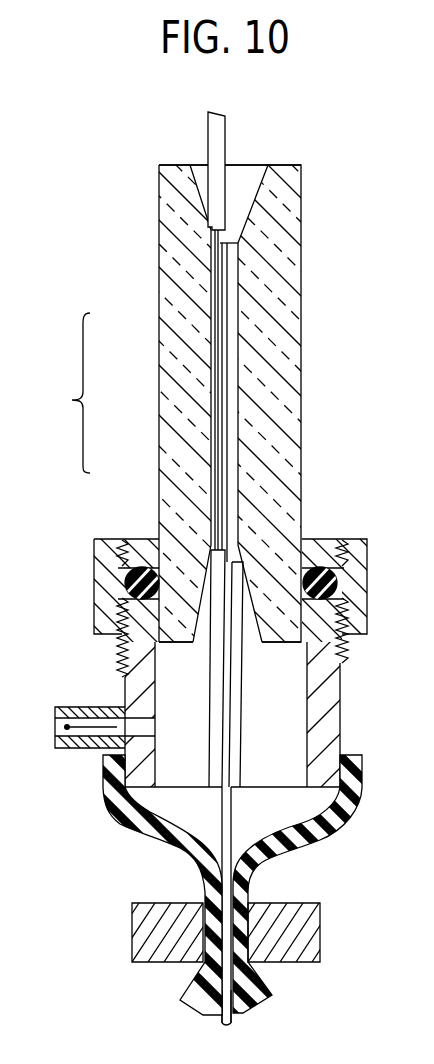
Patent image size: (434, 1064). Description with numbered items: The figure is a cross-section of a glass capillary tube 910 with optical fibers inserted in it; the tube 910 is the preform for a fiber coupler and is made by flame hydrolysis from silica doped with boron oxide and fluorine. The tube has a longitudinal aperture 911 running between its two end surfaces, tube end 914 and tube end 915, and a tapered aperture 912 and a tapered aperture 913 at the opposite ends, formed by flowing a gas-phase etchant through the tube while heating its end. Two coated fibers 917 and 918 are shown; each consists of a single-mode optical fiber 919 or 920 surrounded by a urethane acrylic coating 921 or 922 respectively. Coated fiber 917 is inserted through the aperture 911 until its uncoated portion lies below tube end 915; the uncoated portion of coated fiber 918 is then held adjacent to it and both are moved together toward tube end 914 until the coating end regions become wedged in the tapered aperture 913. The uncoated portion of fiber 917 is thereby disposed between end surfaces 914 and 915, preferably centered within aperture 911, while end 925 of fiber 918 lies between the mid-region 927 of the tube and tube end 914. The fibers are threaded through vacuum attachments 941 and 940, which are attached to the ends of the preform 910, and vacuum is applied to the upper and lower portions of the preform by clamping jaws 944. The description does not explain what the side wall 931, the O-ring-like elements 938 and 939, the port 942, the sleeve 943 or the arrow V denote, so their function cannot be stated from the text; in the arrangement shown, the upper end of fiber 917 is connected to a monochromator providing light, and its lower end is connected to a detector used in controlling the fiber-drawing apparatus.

The glass capillary tube 910 is at (302, 186).
The aperture 911 is at (243, 334).
The tapered aperture 912 is at (259, 180).
The tapered aperture 913 is at (258, 645).
The tube end 914 is at (190, 165).
The tube end 915 is at (177, 647).
The coated fiber 917 is at (208, 125).
The coated fiber 918 is at (231, 800).
The single-mode optical fiber 919 is at (211, 413).
The single-mode optical fiber 920 is at (232, 443).
The urethane acrylic coating 921 is at (227, 127).
The urethane acrylic coating 922 is at (238, 712).
The end of fiber 925 is at (238, 245).
The mid-region 927 is at (72, 400).
The side wall 931 is at (159, 215).
The O-ring seal 938 is at (330, 538).
The O-ring seal 939 is at (125, 537).
The vacuum attachment 940 is at (123, 667).
The vacuum attachment 941 is at (87, 577).
The vacuum port 942 is at (78, 748).
The flexible seal sleeve 943 is at (312, 843).
The clamping jaw 944 is at (140, 931).
The vacuum V is at (88, 704).